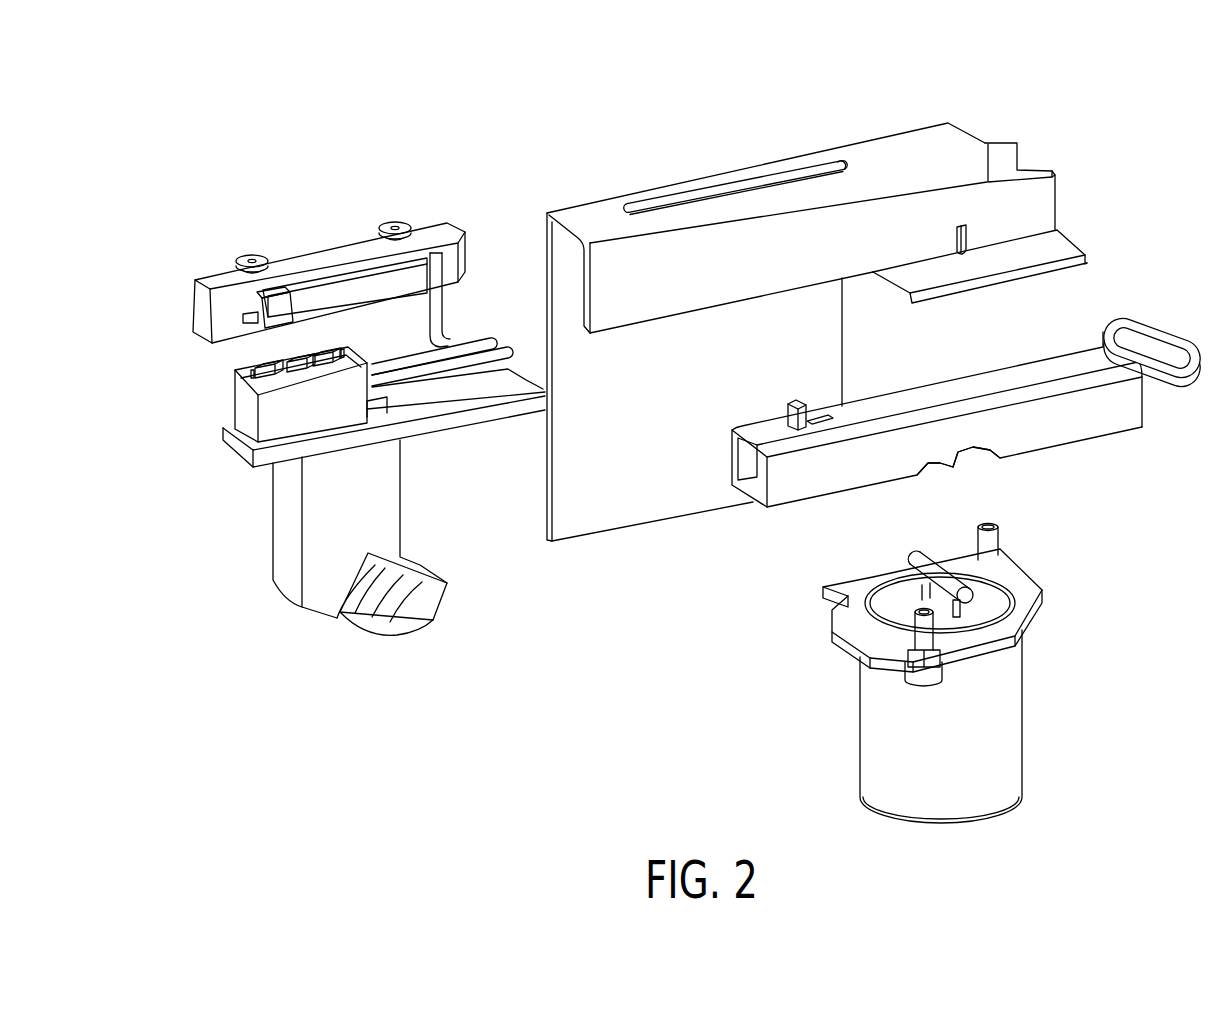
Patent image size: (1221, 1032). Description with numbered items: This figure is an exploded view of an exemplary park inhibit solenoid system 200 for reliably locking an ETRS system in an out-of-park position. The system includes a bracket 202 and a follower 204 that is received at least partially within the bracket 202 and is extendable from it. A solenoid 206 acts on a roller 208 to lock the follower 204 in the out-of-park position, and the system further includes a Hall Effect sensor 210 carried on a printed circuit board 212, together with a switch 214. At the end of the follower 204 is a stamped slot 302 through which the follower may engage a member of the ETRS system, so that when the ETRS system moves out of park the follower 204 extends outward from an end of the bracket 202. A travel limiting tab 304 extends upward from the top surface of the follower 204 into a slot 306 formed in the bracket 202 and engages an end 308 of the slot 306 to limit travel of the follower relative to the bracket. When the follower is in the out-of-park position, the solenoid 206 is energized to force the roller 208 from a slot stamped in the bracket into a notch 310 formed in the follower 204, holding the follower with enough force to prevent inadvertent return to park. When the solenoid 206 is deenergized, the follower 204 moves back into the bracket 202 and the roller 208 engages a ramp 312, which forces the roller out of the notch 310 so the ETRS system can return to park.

The park inhibit solenoid system 200 is at (596, 102).
The bracket 202 is at (960, 173).
The follower 204 is at (1036, 437).
The solenoid 206 is at (888, 720).
The roller 208 is at (1036, 610).
The Hall Effect sensor 210 is at (236, 408).
The printed circuit board 212 is at (240, 452).
The switch 214 is at (264, 308).
The stamped slot 302 is at (1155, 345).
The travel limiting tab 304 is at (788, 403).
The slot 306 is at (722, 190).
The end 308 is at (836, 164).
The notch 310 is at (962, 473).
The ramp 312 is at (990, 455).